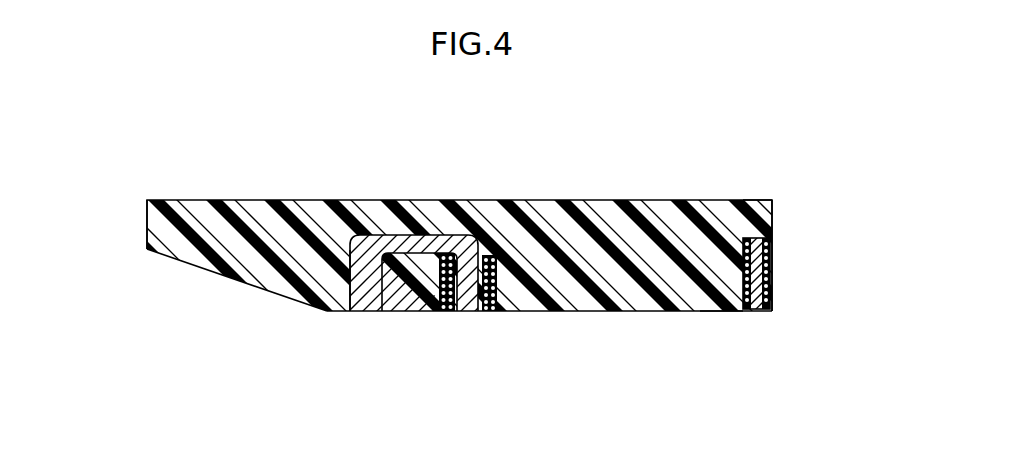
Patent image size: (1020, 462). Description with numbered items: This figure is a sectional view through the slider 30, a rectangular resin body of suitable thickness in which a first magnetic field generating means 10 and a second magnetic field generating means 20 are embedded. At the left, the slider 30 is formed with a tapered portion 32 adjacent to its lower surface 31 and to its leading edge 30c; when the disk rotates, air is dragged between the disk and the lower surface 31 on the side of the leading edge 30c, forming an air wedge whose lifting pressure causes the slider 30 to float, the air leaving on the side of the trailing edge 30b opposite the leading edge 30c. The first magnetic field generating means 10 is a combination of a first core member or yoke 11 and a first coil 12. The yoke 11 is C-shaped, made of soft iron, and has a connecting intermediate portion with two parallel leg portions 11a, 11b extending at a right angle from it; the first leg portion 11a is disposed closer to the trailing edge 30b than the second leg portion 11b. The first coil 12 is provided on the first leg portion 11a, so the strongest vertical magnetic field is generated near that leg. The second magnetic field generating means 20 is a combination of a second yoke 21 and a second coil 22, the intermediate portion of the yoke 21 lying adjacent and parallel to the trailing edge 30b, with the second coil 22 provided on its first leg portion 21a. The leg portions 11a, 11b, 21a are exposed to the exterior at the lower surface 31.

The first magnetic field generating means 10 is at (428, 273).
The first core member (yoke) 11 is at (428, 273).
The first leg portion of the first yoke 11a is at (478, 290).
The second leg portion of the first yoke 11b is at (363, 290).
The first coil 12 is at (432, 290).
The second magnetic field generating means 20 is at (756, 257).
The second core member (yoke) 21 is at (756, 257).
The first leg portion of the second yoke 21a is at (750, 290).
The second coil 22 is at (730, 287).
The slider 30 is at (622, 178).
The trailing edge 30b is at (772, 238).
The leading edge 30c is at (147, 207).
The lower surface 31 is at (571, 311).
The tapered portion 32 is at (205, 272).